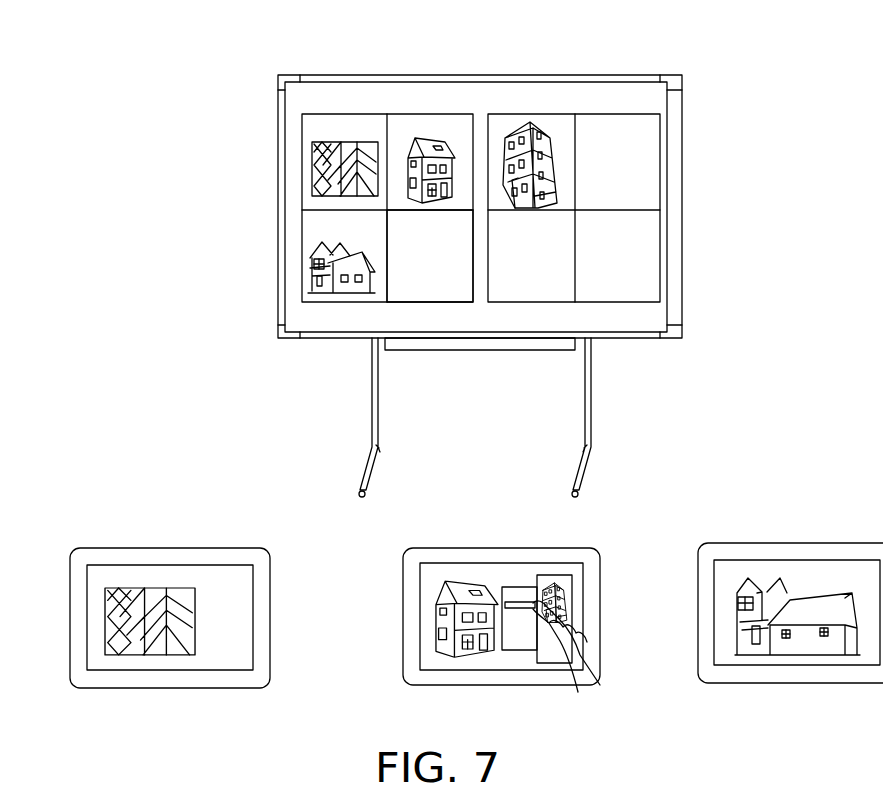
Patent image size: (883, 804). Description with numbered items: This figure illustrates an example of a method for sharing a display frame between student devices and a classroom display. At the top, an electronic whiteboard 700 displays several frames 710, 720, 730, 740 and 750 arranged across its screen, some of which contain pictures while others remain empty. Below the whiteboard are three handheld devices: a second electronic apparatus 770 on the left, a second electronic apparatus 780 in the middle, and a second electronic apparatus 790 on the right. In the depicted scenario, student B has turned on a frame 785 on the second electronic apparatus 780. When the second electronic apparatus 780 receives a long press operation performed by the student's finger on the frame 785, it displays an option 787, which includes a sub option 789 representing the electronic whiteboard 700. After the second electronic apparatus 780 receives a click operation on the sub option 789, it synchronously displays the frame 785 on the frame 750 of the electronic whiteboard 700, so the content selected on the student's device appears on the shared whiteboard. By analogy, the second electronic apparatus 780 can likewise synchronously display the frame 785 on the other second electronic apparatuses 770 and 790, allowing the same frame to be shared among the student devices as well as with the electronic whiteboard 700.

The electronic whiteboard 700 is at (278, 130).
The frame 710 is at (347, 112).
The frame 720 is at (428, 113).
The frame 730 is at (300, 258).
The frame 740 is at (437, 290).
The frame 750 is at (530, 113).
The second electronic apparatus 770 is at (168, 548).
The second electronic apparatus 780 is at (502, 548).
The frame 785 is at (565, 596).
The option 787 is at (522, 652).
The sub option 789 is at (515, 598).
The second electronic apparatus 790 is at (797, 543).